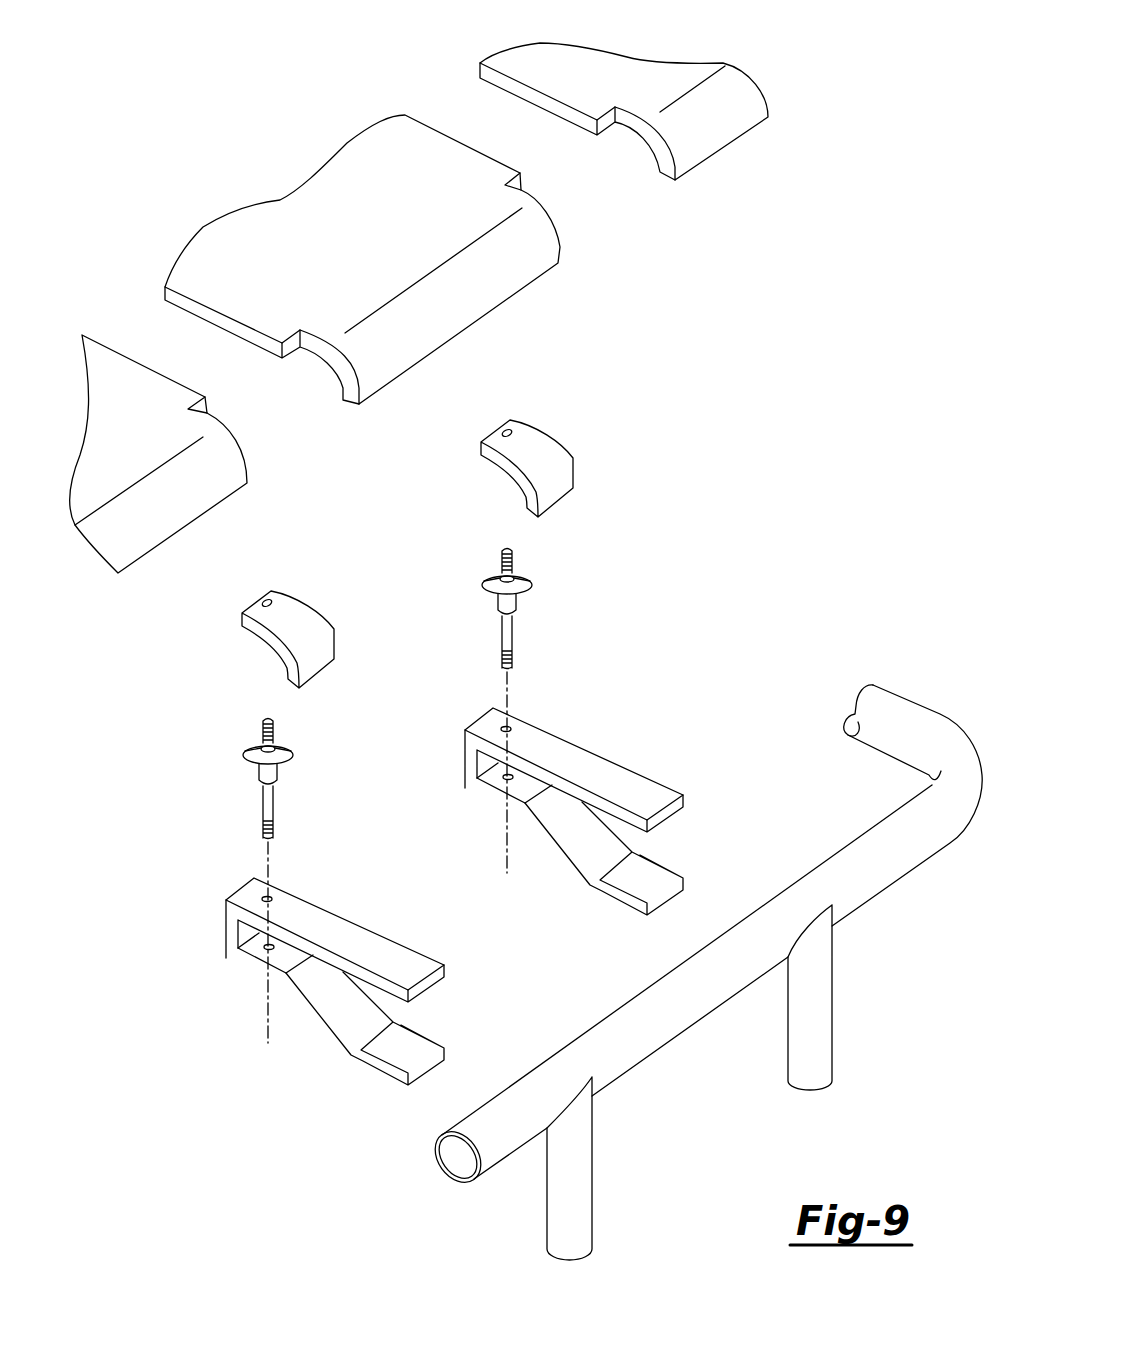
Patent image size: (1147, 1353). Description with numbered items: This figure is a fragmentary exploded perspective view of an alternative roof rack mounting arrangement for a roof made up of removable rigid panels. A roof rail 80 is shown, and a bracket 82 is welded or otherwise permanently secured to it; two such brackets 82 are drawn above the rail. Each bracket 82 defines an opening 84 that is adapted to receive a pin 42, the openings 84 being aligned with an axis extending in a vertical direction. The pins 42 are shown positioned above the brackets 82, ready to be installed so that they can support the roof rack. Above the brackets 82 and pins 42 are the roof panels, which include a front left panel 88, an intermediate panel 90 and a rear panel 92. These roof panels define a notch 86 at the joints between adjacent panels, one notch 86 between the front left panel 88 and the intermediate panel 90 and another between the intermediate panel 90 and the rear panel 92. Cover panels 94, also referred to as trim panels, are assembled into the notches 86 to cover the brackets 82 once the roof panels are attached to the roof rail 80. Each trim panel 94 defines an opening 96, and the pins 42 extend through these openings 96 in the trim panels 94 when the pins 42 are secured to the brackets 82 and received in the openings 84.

The roof rail 80 is at (655, 1025).
The bracket 82 is at (638, 880).
The opening 84 is at (508, 728).
The notch 86 is at (623, 198).
The front left panel 88 is at (188, 493).
The intermediate panel 90 is at (497, 270).
The rear panel 92 is at (708, 128).
The cover panel 94 is at (555, 460).
The opening 96 is at (516, 426).
The pin 42 is at (496, 603).